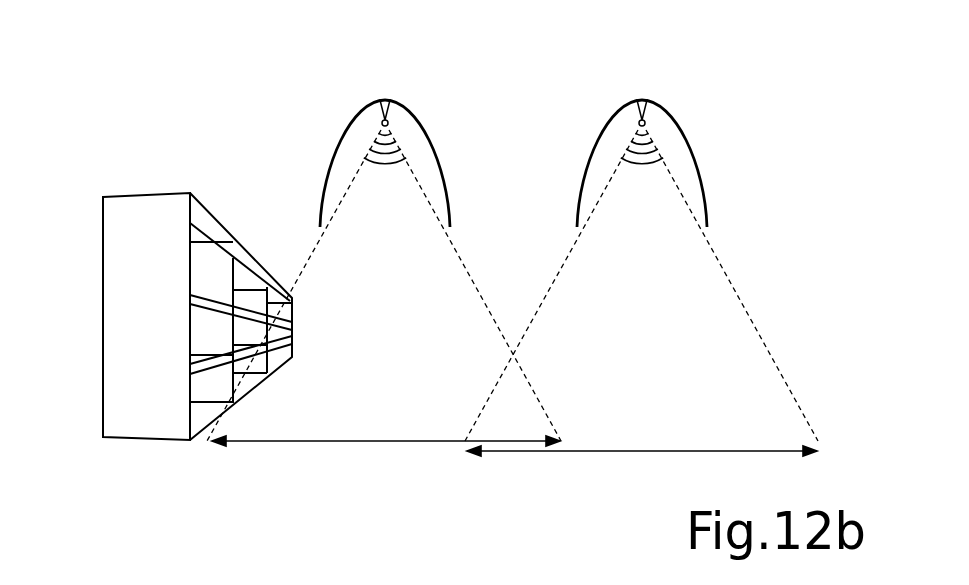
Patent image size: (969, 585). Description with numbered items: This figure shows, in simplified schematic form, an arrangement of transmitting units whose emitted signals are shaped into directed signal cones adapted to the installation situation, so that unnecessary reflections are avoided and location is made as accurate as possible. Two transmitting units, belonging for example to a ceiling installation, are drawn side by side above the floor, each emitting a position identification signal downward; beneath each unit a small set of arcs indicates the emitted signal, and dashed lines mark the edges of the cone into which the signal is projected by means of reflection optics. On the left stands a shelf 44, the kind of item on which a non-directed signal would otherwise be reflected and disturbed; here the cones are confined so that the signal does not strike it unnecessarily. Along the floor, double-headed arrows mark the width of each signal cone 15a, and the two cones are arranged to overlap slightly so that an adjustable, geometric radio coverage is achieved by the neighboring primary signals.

The shelf 44 is at (118, 328).
The signal cone 15a is at (318, 442).